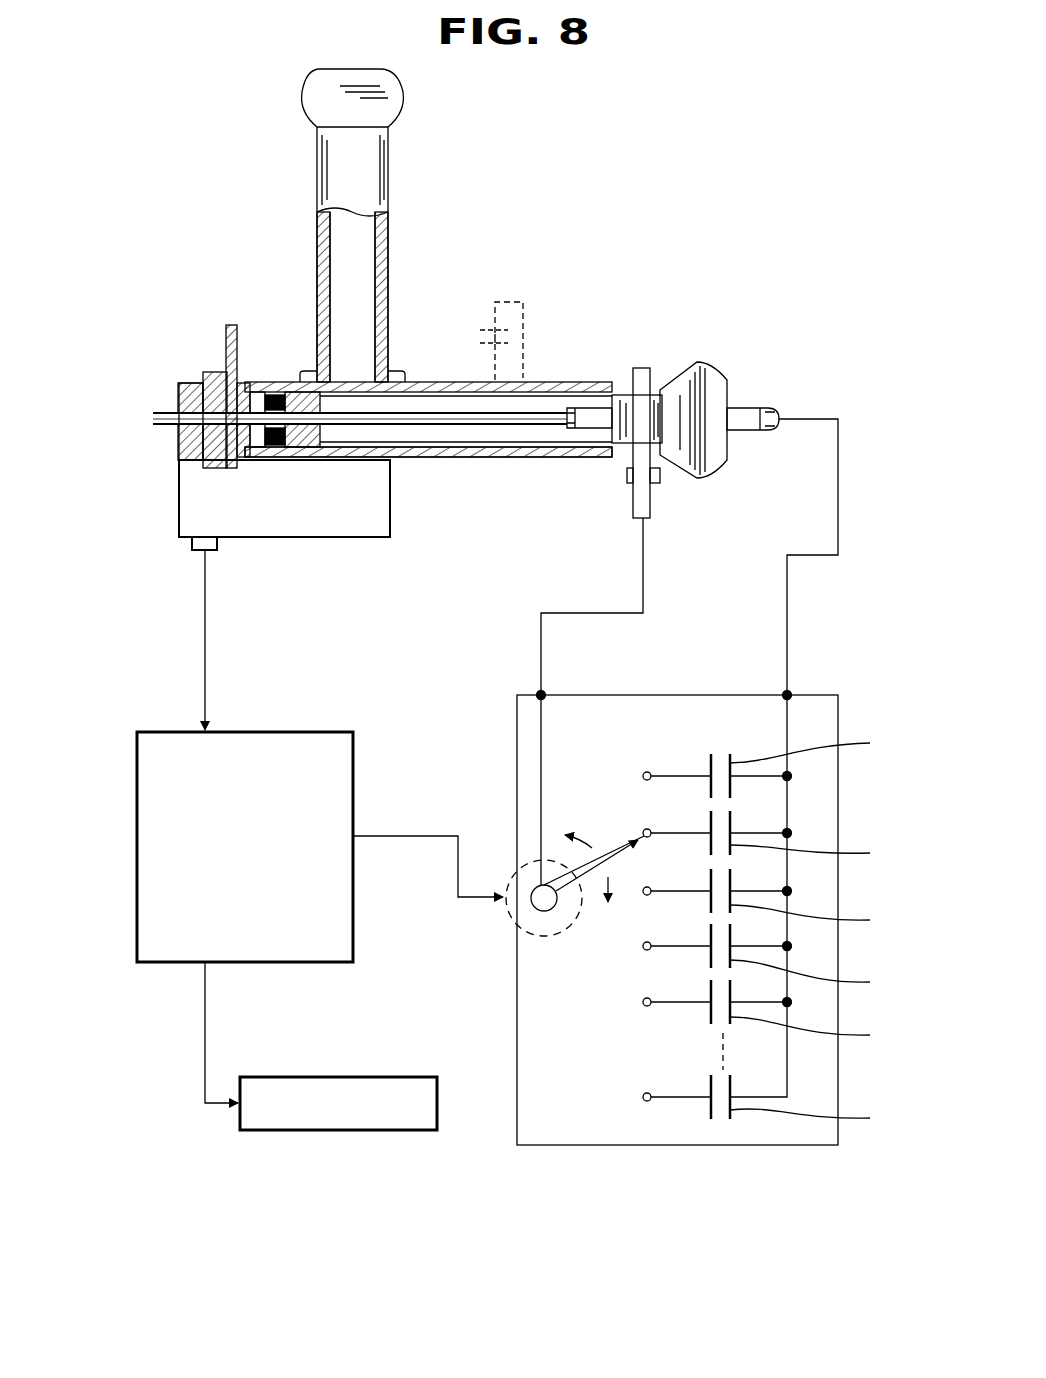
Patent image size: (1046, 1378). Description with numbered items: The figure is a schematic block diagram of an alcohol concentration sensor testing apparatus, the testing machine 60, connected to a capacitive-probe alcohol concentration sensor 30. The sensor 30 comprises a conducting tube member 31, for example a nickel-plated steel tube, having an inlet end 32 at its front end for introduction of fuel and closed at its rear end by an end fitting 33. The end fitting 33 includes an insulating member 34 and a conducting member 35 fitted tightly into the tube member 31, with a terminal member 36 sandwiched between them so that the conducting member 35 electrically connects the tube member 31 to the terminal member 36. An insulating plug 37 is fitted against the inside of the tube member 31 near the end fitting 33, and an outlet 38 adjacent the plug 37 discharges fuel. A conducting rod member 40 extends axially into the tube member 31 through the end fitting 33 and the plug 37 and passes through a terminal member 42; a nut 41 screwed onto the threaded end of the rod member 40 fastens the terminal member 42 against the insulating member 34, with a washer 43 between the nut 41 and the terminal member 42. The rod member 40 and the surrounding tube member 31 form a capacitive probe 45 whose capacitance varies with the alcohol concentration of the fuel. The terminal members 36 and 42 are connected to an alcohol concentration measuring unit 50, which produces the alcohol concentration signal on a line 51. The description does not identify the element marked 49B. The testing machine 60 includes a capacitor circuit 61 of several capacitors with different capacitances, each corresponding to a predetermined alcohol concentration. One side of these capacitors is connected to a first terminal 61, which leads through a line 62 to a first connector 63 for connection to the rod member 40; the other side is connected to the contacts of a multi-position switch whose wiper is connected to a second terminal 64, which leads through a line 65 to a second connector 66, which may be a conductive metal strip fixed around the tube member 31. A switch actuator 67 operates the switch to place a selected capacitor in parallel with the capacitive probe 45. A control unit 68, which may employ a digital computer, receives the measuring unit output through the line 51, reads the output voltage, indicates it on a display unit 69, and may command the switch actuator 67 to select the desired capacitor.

The alcohol concentration sensor 30 is at (216, 244).
The tube member 31 is at (585, 382).
The inlet end 32 is at (728, 450).
The end fitting 33 is at (225, 472).
The insulating member 34 is at (257, 460).
The conducting member 35 is at (255, 383).
The terminal member 36 is at (225, 345).
The plug 37 is at (310, 455).
The outlet 38 is at (388, 270).
The conducting rod member 40 is at (507, 426).
The nut 41 is at (180, 440).
The terminal member 42 is at (180, 457).
The washer 43 is at (195, 380).
The capacitive probe 45 is at (437, 460).
The pin 49B is at (578, 430).
The alcohol concentration measuring unit 50 is at (185, 520).
The line 51 is at (205, 622).
The testing machine 60 is at (856, 689).
The capacitor circuit 61 is at (790, 693).
The line 62 is at (787, 597).
The first connector 63 is at (745, 408).
The second terminal 64 is at (541, 693).
The line 65 is at (643, 580).
The second connector 66 is at (643, 368).
The switch actuator 67 is at (506, 915).
The control unit 68 is at (137, 848).
The display unit 69 is at (338, 1077).